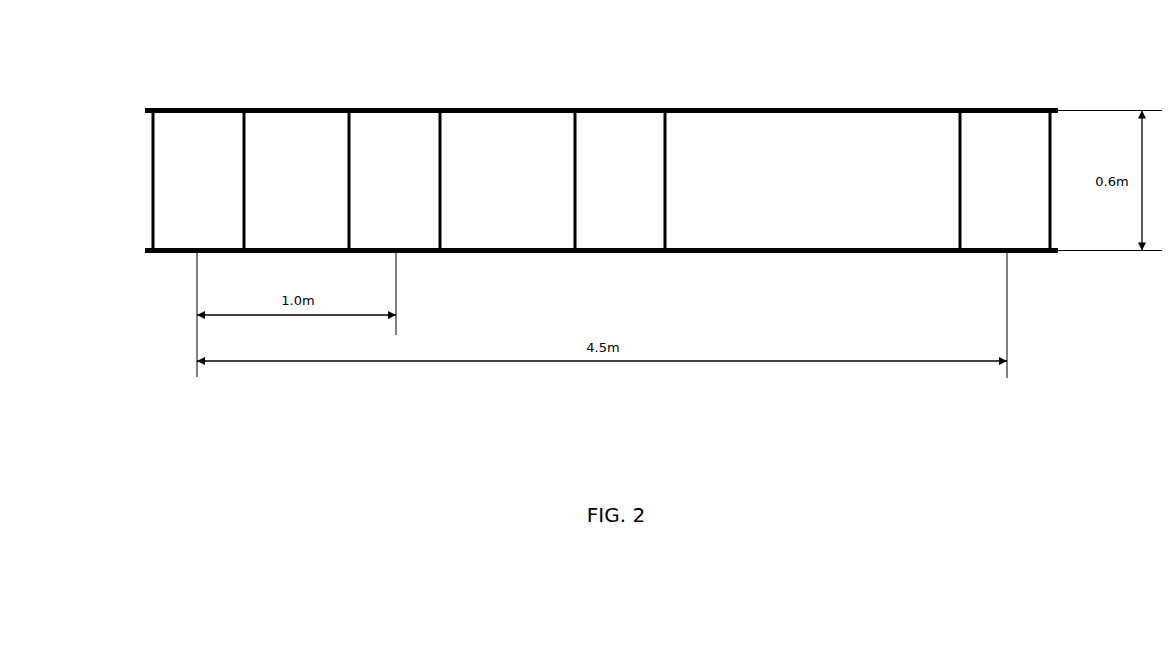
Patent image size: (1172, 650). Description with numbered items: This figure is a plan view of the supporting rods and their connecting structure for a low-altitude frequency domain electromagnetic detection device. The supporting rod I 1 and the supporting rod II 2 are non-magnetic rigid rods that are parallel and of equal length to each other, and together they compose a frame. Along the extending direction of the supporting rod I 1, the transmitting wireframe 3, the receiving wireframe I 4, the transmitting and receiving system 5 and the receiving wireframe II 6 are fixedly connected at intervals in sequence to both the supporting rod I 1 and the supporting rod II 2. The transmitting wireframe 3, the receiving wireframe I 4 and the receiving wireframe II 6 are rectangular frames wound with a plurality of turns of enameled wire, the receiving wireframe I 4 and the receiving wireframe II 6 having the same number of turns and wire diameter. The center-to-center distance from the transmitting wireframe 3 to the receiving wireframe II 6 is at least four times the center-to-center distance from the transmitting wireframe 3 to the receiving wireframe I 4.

The supporting rod I 1 is at (765, 109).
The supporting rod II 2 is at (842, 250).
The transmitting wireframe 3 is at (243, 177).
The receiving wireframe I 4 is at (437, 160).
The transmitting and receiving system 5 is at (610, 163).
The receiving wireframe II 6 is at (1048, 168).